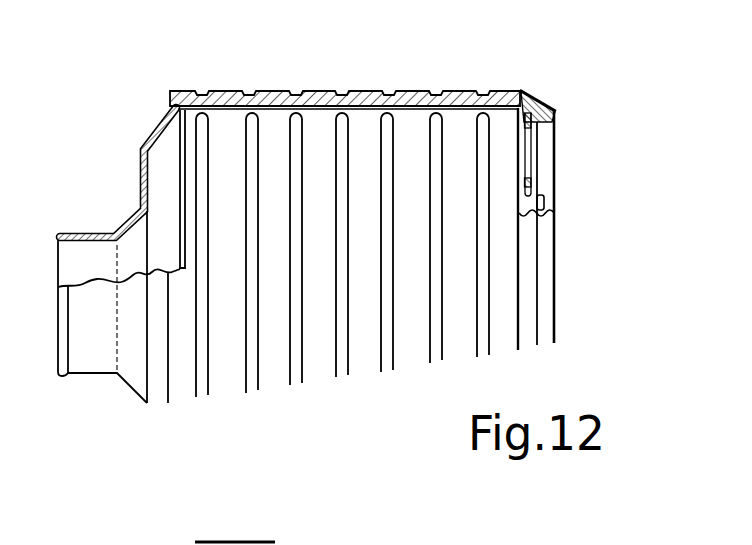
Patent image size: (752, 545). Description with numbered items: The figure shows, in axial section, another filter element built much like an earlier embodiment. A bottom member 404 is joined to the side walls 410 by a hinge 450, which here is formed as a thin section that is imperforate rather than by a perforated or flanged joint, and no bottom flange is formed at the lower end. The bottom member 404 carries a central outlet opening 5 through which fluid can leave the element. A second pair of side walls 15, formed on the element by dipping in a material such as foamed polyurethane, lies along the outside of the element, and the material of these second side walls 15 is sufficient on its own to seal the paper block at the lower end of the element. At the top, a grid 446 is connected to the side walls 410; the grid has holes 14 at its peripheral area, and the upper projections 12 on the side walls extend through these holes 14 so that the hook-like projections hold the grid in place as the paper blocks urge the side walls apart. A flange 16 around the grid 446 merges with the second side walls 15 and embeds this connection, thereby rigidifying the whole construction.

The central outlet opening 5 is at (92, 240).
The upper projections 12 is at (555, 210).
The holes 14 is at (538, 192).
The second side walls 15 is at (356, 90).
The flange 16 is at (552, 305).
The bottom member 404 is at (143, 167).
The side walls 410 is at (250, 123).
The grid 446 is at (538, 157).
The hinge 450 is at (180, 157).